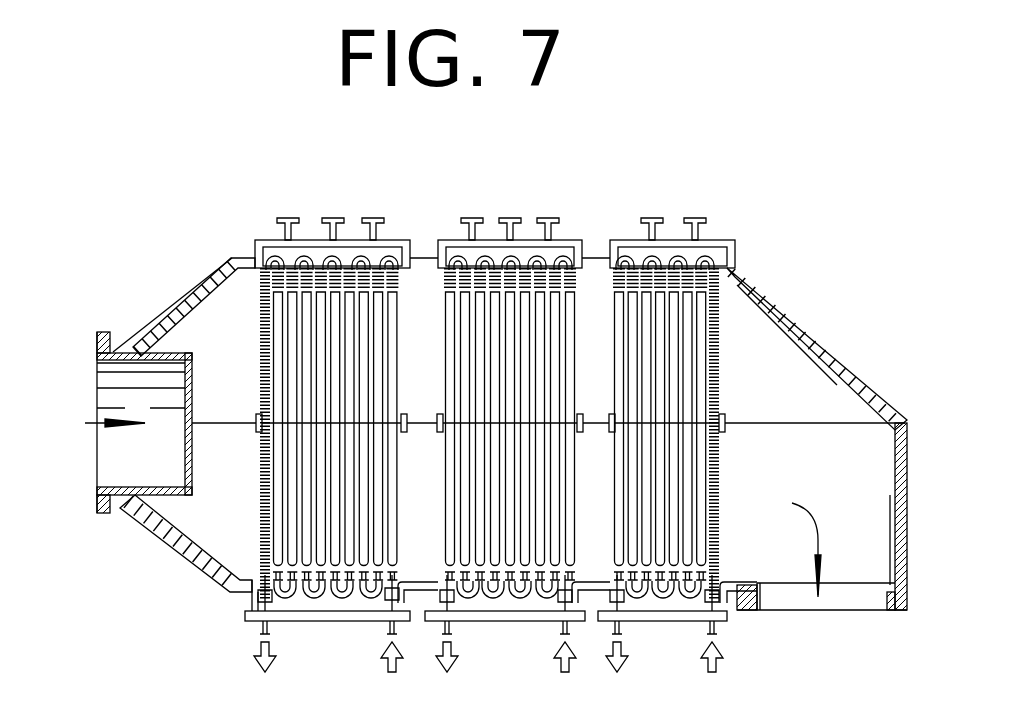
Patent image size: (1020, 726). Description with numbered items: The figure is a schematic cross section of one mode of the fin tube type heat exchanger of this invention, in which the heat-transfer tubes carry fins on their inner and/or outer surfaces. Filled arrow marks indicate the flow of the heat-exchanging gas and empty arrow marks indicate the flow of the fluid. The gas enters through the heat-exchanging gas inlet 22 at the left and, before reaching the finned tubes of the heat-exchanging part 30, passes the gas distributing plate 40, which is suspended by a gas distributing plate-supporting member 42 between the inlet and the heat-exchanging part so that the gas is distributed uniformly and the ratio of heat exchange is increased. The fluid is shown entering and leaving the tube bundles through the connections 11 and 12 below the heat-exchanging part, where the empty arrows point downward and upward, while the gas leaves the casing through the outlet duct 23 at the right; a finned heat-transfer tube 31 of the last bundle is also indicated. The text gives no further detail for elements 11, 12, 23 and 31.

The inlet stub / downward flow connection 11 is at (257, 630).
The outlet stub / upward flow connection 12 is at (387, 630).
The heat-exchanging gas inlet 22 is at (108, 458).
The outlet duct 23 is at (795, 606).
The heat-exchanging part 30 is at (361, 312).
The heat exchanger tube 31 is at (697, 360).
The gas distributing plate 40 is at (190, 478).
The gas distributing plate-supporting member 42 is at (160, 357).